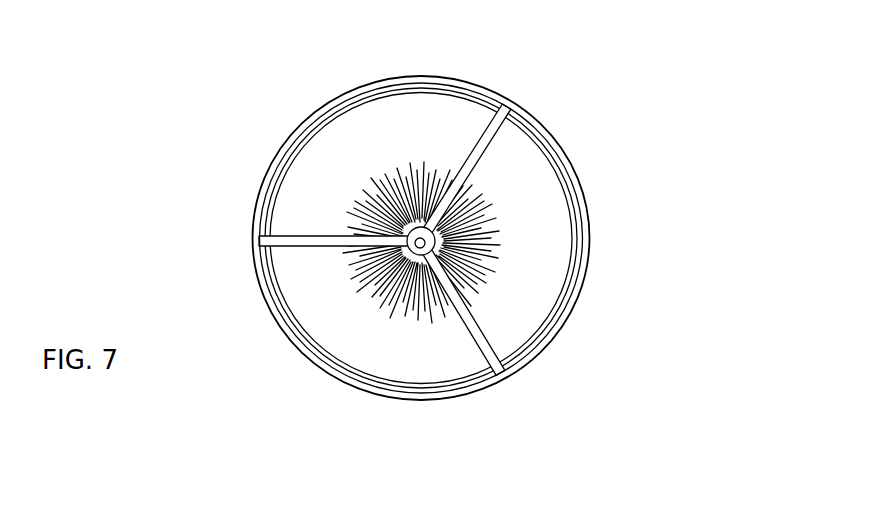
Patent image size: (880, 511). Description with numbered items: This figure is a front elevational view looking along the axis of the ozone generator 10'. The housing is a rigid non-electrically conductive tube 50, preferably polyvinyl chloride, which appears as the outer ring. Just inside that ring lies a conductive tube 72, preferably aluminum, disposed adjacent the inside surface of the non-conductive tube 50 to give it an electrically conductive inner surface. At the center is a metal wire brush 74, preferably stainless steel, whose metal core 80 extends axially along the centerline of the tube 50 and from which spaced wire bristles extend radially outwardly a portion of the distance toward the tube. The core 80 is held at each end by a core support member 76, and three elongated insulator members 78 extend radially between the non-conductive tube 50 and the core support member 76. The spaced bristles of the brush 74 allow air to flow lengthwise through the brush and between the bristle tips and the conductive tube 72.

The ozone generator 10' is at (746, 71).
The non-electrically conductive tube 50 is at (555, 146).
The conductive tube 72 is at (538, 334).
The metal wire brush 74 is at (490, 254).
The core support member 76 is at (420, 226).
The elongated insulator member 78 is at (481, 135).
The metal core 80 is at (421, 248).